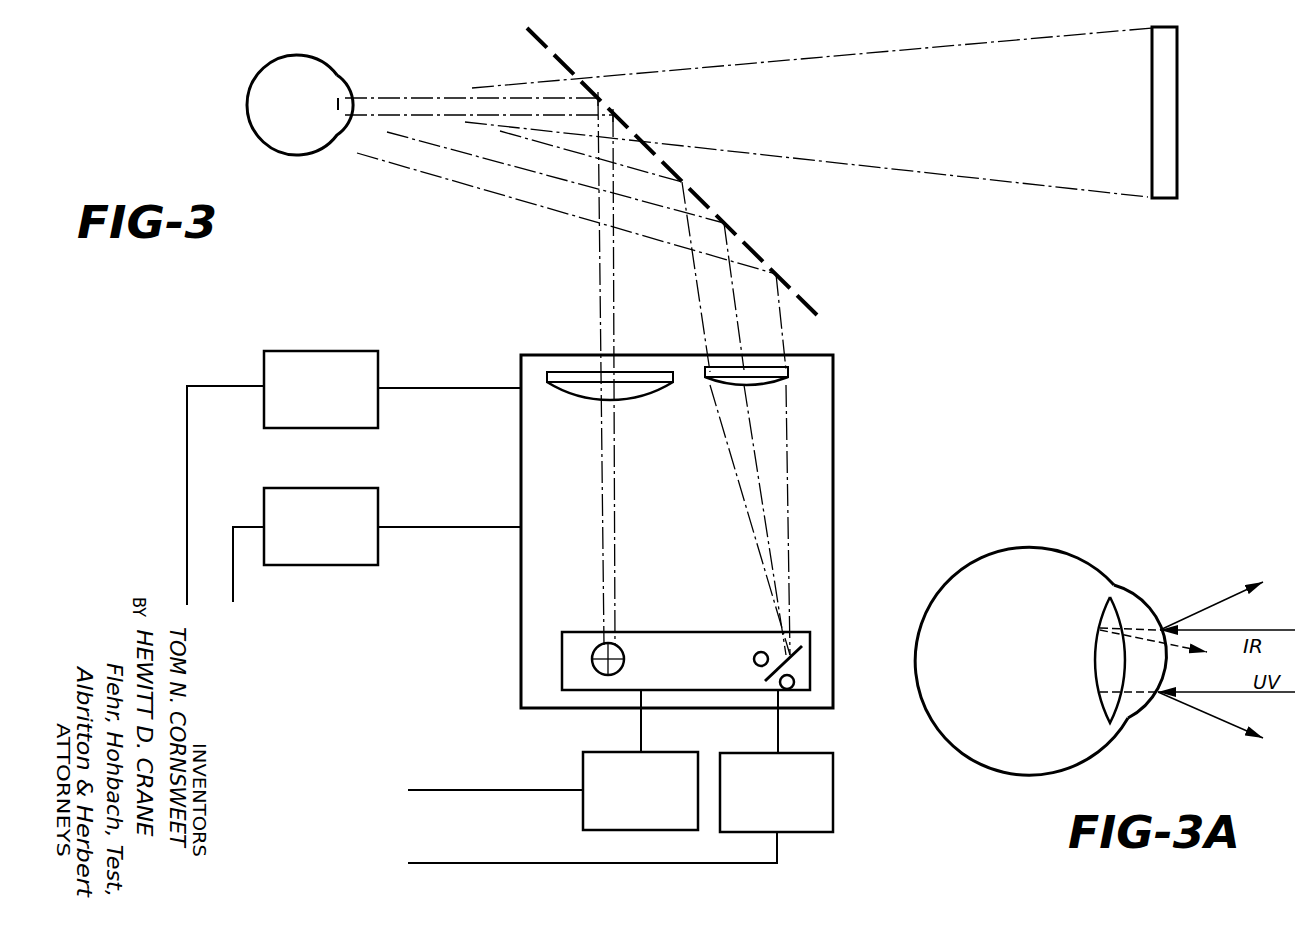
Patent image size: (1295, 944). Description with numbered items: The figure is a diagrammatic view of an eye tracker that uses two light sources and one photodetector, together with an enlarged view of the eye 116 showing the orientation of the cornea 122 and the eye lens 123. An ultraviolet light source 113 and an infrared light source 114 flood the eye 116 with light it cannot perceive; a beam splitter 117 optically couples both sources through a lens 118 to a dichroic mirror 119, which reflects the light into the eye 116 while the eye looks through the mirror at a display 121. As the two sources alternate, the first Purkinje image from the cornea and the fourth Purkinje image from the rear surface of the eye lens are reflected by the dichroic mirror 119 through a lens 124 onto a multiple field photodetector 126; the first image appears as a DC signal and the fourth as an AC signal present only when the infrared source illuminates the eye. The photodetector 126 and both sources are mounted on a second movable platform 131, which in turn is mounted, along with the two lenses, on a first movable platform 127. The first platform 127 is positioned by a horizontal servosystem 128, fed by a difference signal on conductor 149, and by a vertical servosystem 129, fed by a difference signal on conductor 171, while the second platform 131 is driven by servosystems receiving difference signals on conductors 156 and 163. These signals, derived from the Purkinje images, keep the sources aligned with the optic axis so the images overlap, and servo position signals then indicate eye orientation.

In FIG. 3, the eye 116 is at (252, 79).
In FIG. 3A, the eye 116 is at (1043, 556).
In FIG. 3, the dichroic mirror 119 is at (736, 232).
In FIG. 3, the display 121 is at (1172, 106).
In FIG. 3, the lens 124 is at (645, 372).
In FIG. 3, the lens 118 is at (762, 338).
In FIG. 3, the first movable platform 127 is at (833, 470).
In FIG. 3, the horizontal servosystem 128 is at (306, 321).
In FIG. 3, the vertical servosystem 129 is at (350, 461).
In FIG. 3, the conductor 149 is at (187, 398).
In FIG. 3, the conductor 171 is at (233, 596).
In FIG. 3, the multiple field photodetector 126 is at (594, 651).
In FIG. 3, the second movable platform 131 is at (697, 610).
In FIG. 3, the infrared light source 114 is at (753, 660).
In FIG. 3, the beam splitter 117 is at (800, 652).
In FIG. 3, the ultraviolet light source 113 is at (810, 684).
In FIG. 3, the conductor 156 is at (492, 789).
In FIG. 3, the conductor 163 is at (513, 866).
In FIG. 3A, the eye lens 123 is at (1110, 594).
In FIG. 3A, the cornea 122 is at (1148, 613).